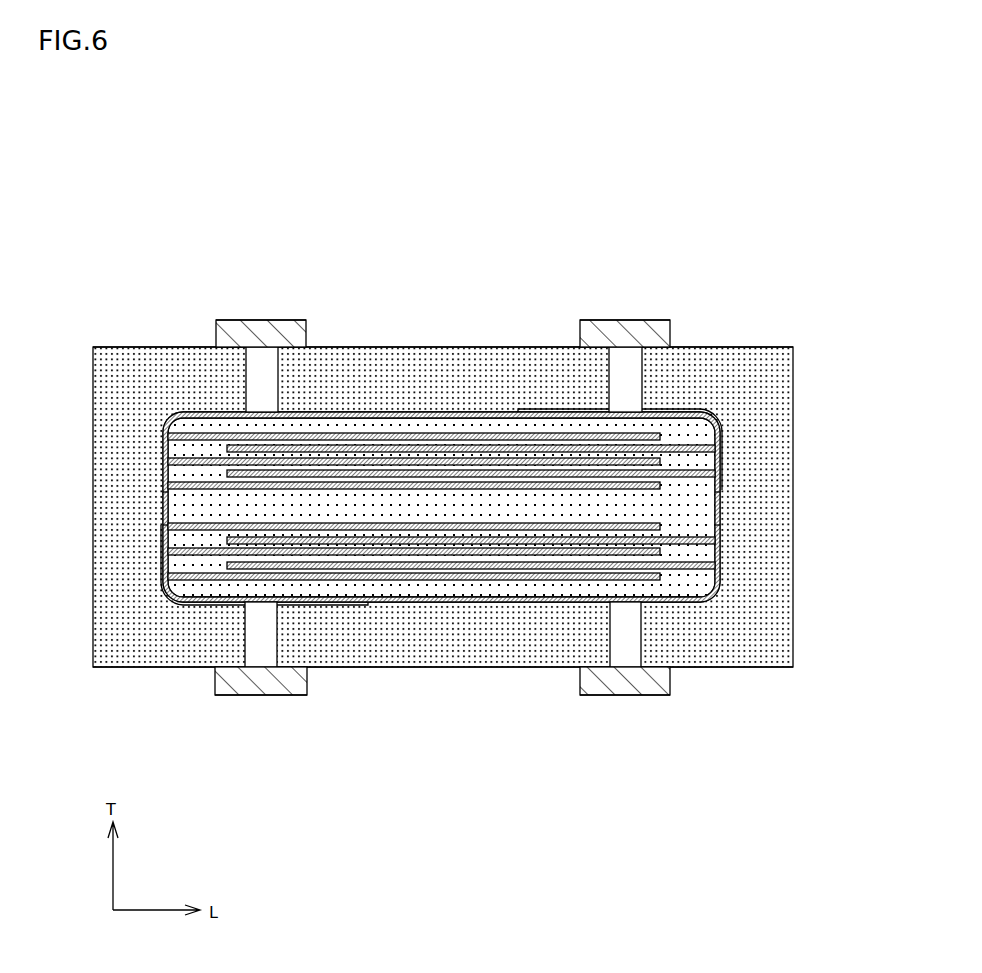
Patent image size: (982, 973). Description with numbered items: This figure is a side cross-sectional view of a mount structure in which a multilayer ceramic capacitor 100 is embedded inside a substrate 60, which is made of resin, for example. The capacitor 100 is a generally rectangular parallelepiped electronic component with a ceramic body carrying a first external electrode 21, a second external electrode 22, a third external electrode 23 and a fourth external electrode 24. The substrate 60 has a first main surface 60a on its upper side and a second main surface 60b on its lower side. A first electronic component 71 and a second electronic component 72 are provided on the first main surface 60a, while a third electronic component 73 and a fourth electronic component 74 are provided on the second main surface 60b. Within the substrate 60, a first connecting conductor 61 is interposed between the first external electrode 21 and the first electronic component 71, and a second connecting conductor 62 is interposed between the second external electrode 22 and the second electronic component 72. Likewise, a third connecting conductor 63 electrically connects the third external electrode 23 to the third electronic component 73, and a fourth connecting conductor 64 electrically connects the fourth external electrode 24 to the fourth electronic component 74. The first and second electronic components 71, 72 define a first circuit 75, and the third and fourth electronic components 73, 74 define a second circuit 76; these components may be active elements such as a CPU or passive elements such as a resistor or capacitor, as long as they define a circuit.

The substrate 60 is at (168, 347).
The first main surface 60a is at (448, 347).
The second main surface 60b is at (435, 667).
The multilayer ceramic capacitor 100 is at (698, 400).
The first external electrode 21 is at (163, 457).
The second external electrode 22 is at (720, 452).
The third external electrode 23 is at (163, 555).
The fourth external electrode 24 is at (722, 560).
The first connecting conductor 61 is at (280, 385).
The second connecting conductor 62 is at (607, 385).
The third connecting conductor 63 is at (245, 633).
The fourth connecting conductor 64 is at (642, 631).
The first electronic component 71 is at (265, 320).
The second electronic component 72 is at (640, 320).
The third electronic component 73 is at (262, 697).
The fourth electronic component 74 is at (625, 697).
The first circuit 75 is at (593, 313).
The second circuit 76 is at (578, 698).